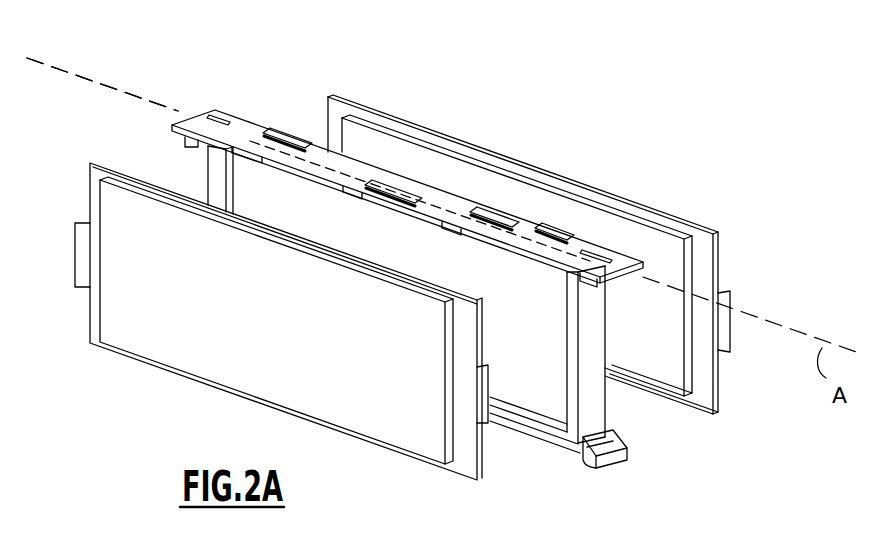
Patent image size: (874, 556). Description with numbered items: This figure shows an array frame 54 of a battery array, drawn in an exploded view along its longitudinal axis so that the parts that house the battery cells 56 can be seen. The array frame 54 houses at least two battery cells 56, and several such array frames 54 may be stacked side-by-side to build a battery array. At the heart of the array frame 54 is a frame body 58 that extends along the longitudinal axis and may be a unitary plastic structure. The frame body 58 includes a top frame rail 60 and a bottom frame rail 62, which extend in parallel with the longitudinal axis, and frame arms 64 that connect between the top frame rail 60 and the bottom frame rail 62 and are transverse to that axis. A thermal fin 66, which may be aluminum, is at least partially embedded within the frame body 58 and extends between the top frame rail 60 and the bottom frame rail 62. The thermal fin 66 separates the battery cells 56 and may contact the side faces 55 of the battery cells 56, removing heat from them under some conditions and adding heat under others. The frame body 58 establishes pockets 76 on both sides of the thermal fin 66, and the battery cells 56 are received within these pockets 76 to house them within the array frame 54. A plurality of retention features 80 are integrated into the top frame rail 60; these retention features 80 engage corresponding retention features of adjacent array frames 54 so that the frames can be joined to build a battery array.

The array frame 54 is at (178, 106).
The side faces 55 is at (290, 337).
The battery cells 56 is at (97, 177).
The frame body 58 is at (612, 398).
The top frame rail 60 is at (245, 130).
The bottom frame rail 62 is at (565, 460).
The frame arms 64 is at (213, 183).
The thermal fin 66 is at (540, 331).
The pockets 76 is at (605, 428).
The retention features 80 is at (340, 172).